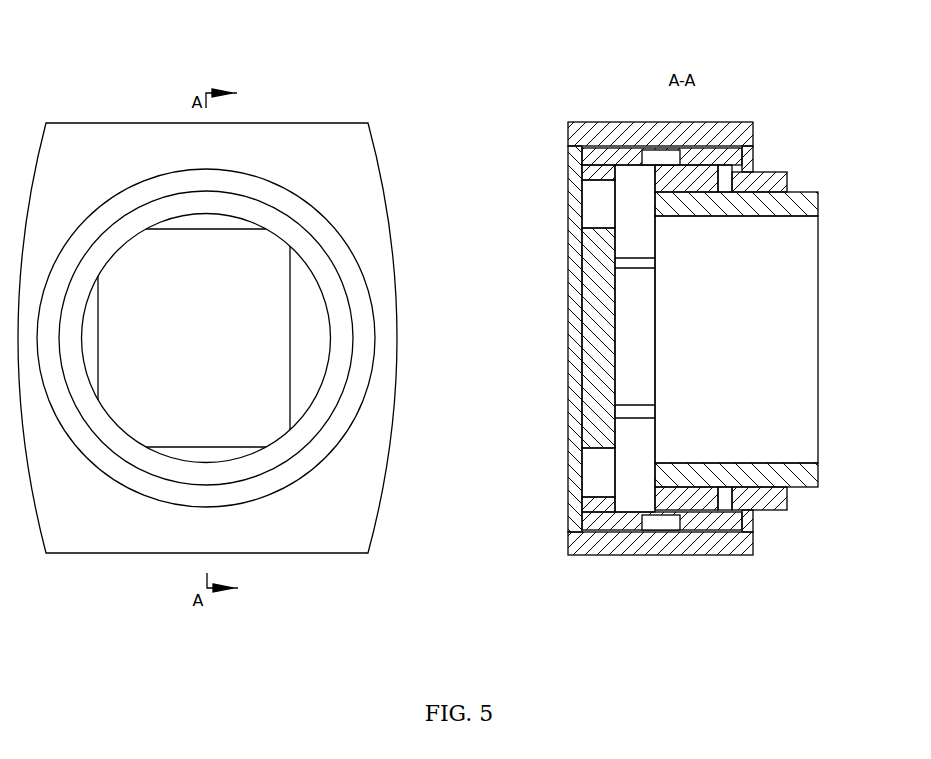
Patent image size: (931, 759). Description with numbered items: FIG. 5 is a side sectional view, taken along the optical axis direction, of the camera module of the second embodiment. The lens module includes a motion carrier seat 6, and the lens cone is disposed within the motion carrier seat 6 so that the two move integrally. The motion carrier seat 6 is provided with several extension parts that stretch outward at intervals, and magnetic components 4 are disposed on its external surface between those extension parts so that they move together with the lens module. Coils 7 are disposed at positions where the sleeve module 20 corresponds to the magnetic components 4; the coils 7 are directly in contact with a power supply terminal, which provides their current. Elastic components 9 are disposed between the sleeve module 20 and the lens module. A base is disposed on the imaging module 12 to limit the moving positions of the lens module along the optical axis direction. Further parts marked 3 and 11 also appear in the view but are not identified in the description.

The housing 3 is at (623, 550).
The magnetic component 4 is at (742, 553).
The motion carrier seat 6 is at (808, 490).
The coil 7 is at (700, 550).
The elastic component 9 is at (720, 188).
The groove 11 is at (586, 505).
The imaging module 12 is at (570, 258).
The sleeve module 20 is at (766, 178).